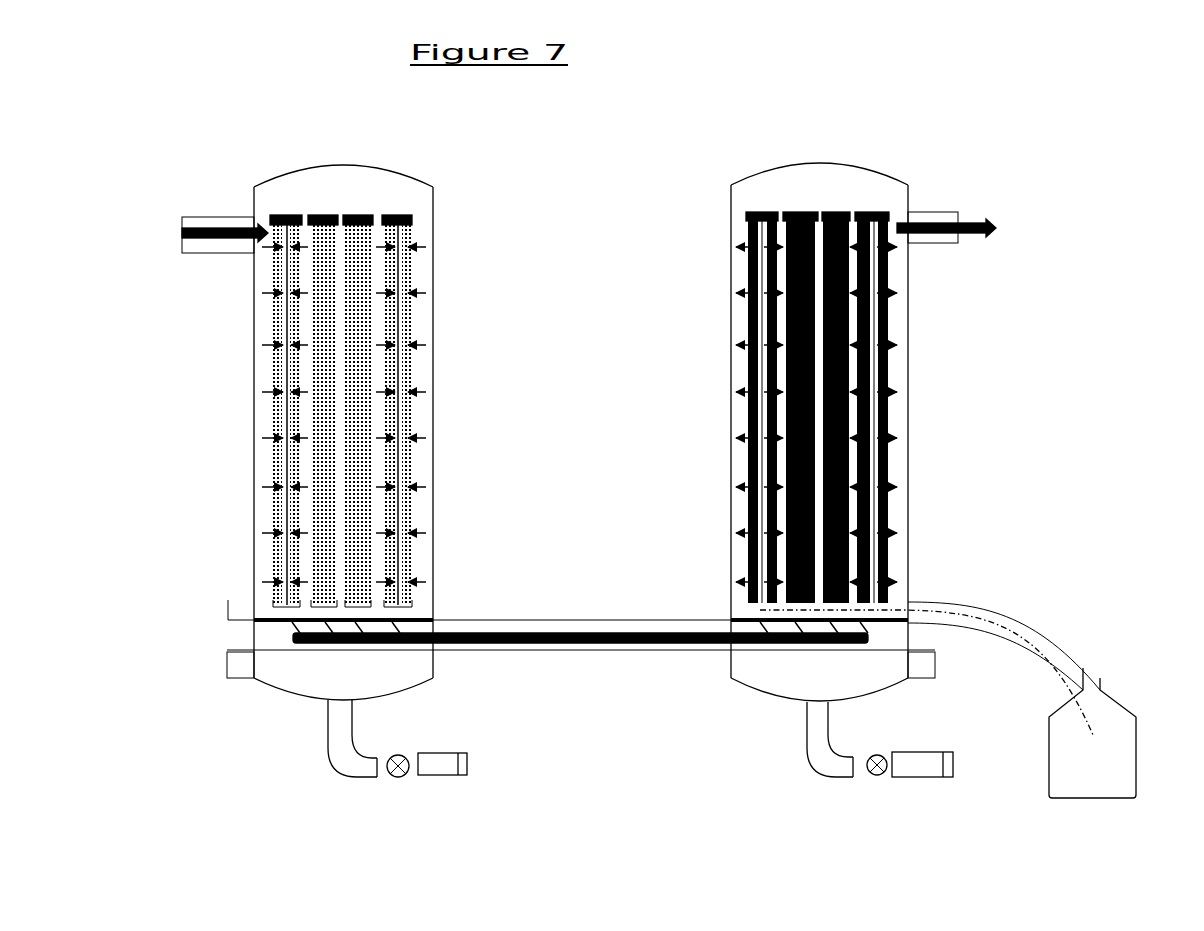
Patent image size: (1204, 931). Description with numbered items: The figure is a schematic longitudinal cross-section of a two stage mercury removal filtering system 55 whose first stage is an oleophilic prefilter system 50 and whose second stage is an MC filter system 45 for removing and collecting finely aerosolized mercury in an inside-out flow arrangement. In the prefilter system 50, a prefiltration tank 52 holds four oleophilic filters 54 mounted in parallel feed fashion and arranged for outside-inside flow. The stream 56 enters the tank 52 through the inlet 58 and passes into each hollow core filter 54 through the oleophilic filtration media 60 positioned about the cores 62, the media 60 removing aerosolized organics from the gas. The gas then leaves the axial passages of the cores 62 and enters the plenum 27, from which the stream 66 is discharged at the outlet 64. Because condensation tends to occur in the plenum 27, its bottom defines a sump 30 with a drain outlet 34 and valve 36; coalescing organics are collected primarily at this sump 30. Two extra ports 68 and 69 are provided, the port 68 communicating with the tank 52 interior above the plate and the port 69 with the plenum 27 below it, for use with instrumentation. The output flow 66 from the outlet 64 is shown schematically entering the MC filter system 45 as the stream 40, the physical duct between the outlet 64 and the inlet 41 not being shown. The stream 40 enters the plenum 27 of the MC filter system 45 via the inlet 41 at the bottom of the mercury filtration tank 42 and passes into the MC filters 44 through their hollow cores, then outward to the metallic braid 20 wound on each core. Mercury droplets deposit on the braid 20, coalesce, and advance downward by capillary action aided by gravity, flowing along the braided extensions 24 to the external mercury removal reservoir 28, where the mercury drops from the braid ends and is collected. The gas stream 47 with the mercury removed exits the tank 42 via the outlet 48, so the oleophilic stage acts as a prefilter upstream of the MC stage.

The two stage mercury removal filtering system 55 is at (630, 113).
The oleophilic prefilter system 50 is at (258, 143).
The prefiltration tank 52 is at (248, 352).
The oleophilic filters 54 is at (288, 212).
The stream 56 is at (177, 250).
The inlet 58 is at (207, 210).
The oleophilic filtration media 60 is at (265, 412).
The cores 62 is at (280, 468).
The outlet 64 is at (457, 614).
The stream 66 is at (469, 626).
The port 68 is at (228, 597).
The port 69 is at (228, 652).
The plenum 27 is at (364, 676).
The sump 30 is at (362, 718).
The drain outlet 34 is at (872, 778).
The valve 36 is at (868, 781).
The MC filter system 45 is at (933, 143).
The mercury filtration tank 42 is at (913, 390).
The MC filters 44 is at (764, 209).
The metallic braid 20 is at (813, 372).
The inlet 41 is at (694, 613).
The stream 40 is at (682, 625).
The gas stream 47 is at (976, 240).
The outlet 48 is at (958, 212).
The braided extensions 24 is at (906, 600).
The mercury removal reservoir 28 is at (1109, 690).